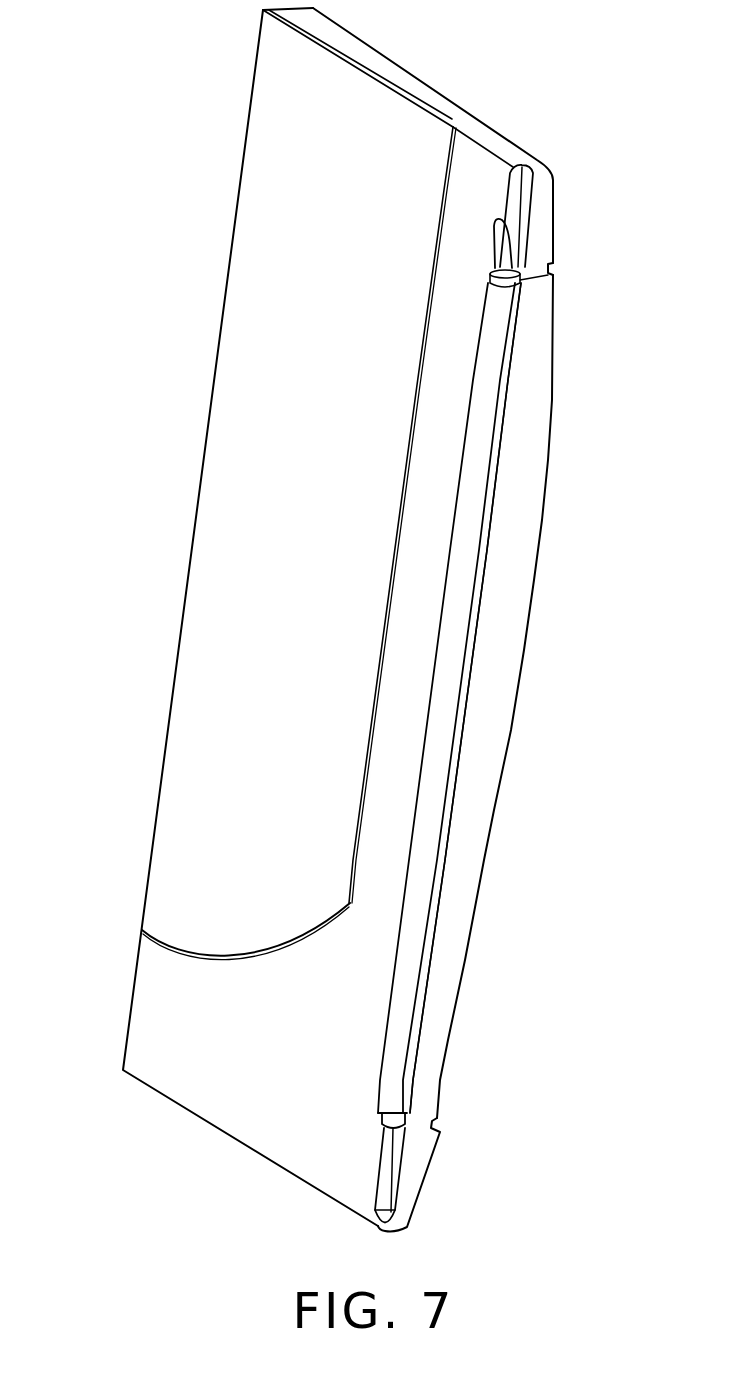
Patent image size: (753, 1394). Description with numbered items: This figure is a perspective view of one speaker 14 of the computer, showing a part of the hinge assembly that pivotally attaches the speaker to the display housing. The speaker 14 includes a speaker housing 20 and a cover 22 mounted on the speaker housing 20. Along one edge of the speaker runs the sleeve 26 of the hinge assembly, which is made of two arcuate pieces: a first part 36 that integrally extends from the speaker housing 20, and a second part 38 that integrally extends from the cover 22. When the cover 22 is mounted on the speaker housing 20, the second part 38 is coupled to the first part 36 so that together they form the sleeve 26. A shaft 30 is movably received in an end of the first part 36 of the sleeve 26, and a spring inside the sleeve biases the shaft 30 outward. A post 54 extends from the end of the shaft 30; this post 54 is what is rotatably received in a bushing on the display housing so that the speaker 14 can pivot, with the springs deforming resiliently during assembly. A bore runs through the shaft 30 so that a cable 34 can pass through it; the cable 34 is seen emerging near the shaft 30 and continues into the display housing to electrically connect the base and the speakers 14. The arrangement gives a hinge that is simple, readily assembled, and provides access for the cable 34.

The speaker 14 is at (477, 38).
The speaker housing 20 is at (523, 405).
The cover 22 is at (288, 508).
The sleeve 26 is at (474, 536).
The shaft 30 is at (493, 273).
The cable 34 is at (507, 240).
The first part 36 is at (517, 312).
The second part 38 is at (497, 316).
The post 54 is at (553, 273).